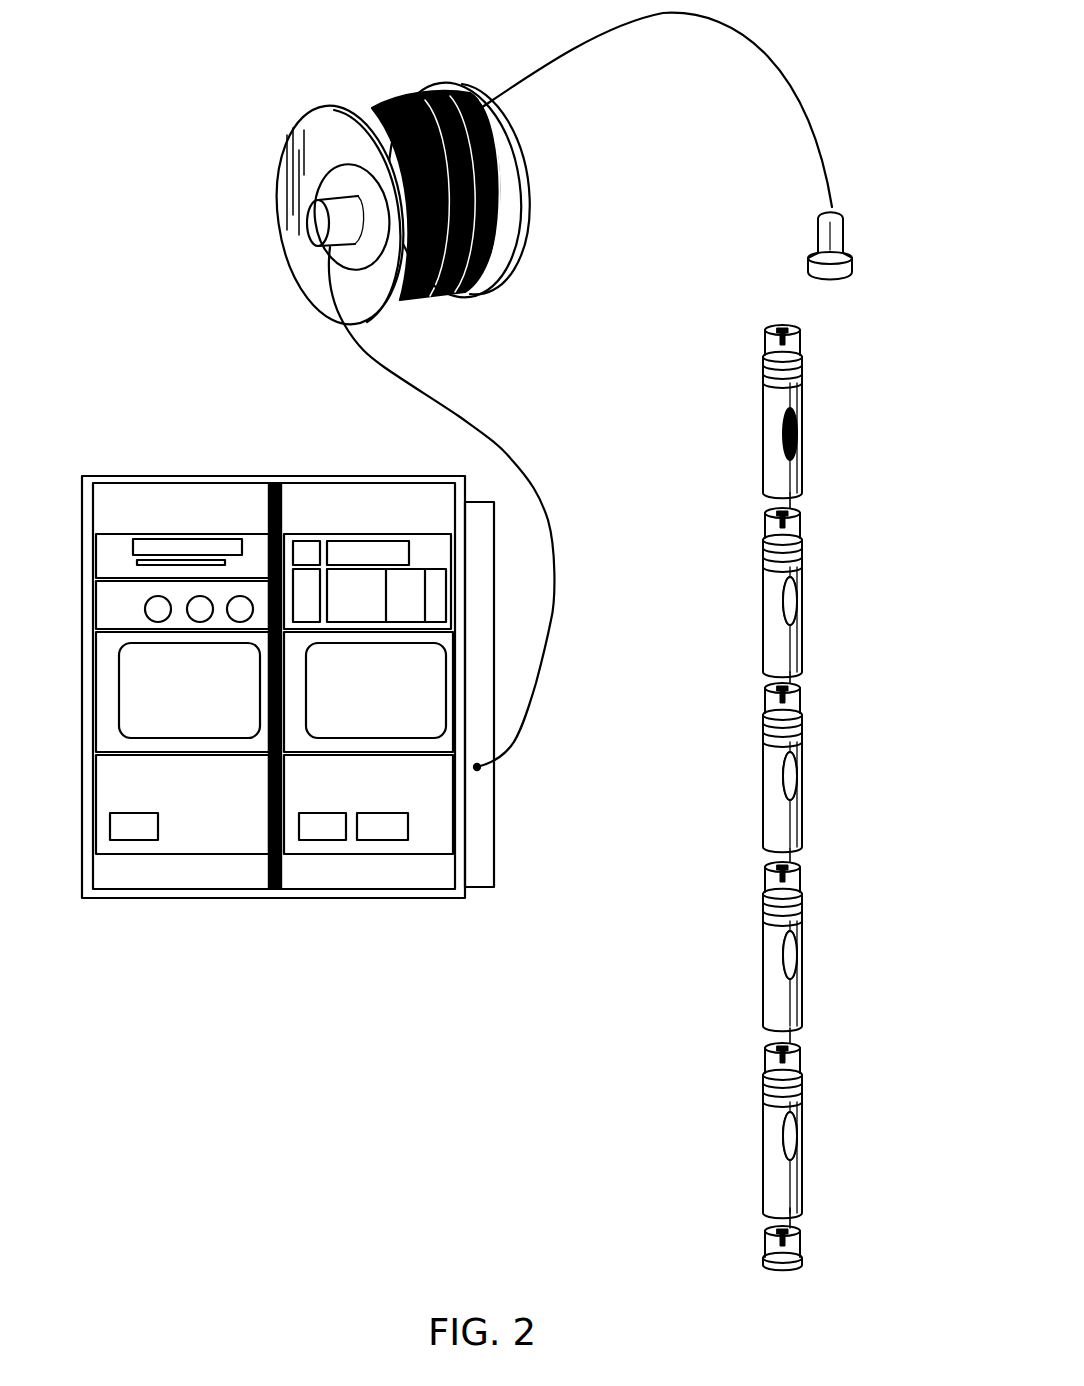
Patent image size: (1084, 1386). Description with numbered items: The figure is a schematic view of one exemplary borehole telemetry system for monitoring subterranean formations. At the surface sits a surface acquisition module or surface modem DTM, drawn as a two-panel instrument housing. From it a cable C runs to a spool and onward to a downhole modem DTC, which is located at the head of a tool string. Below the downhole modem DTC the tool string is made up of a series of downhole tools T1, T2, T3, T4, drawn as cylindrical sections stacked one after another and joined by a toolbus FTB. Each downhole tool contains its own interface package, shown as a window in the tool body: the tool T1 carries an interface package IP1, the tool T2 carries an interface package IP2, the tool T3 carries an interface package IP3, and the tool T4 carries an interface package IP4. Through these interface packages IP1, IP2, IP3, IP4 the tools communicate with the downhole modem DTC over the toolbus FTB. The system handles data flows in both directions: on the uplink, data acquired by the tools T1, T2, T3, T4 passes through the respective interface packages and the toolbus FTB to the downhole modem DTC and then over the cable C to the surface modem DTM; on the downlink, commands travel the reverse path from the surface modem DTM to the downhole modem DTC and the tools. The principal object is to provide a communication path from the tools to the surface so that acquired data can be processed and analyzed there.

The cable C is at (523, 92).
The surface modem DTM is at (420, 565).
The downhole modem DTC is at (802, 383).
The toolbus FTB is at (790, 503).
The downhole tool T1 is at (802, 568).
The interface package IP1 is at (797, 603).
The downhole tool T2 is at (802, 748).
The interface package IP2 is at (797, 790).
The downhole tool T3 is at (802, 925).
The interface package IP3 is at (797, 960).
The downhole tool T4 is at (802, 1107).
The interface package IP4 is at (797, 1140).